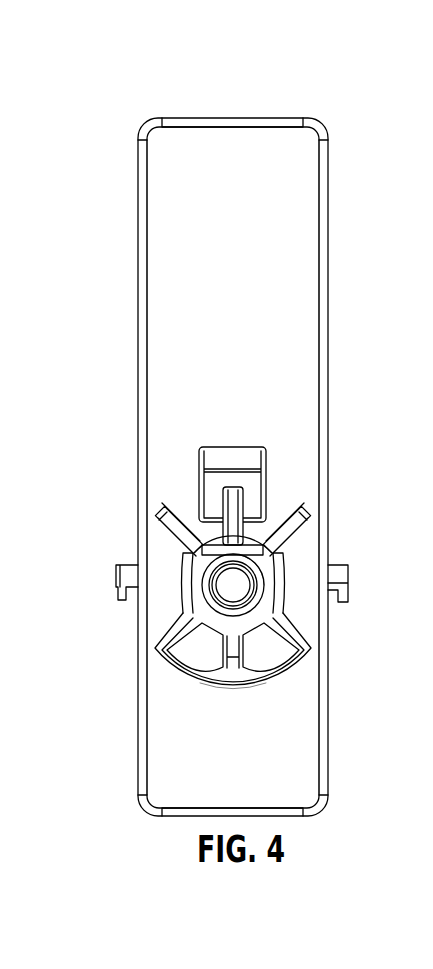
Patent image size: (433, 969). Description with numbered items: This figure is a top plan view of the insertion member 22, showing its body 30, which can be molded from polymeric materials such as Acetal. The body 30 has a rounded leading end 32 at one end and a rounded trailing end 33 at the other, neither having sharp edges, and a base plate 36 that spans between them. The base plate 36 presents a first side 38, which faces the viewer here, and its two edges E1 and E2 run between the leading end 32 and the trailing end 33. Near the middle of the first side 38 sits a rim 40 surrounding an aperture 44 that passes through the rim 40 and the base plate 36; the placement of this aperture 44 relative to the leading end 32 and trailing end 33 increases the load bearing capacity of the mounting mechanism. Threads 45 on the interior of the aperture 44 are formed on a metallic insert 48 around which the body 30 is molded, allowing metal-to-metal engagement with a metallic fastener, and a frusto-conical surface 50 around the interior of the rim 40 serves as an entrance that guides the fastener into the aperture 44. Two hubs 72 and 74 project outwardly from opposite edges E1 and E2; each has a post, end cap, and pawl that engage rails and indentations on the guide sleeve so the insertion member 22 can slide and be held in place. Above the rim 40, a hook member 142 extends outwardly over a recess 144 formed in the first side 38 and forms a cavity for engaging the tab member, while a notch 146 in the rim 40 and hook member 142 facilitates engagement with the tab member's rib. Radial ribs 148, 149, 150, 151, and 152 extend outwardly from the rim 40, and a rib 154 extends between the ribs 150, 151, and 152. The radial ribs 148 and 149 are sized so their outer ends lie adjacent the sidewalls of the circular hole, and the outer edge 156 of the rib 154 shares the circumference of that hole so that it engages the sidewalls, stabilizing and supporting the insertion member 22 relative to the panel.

The insertion member 22 is at (118, 199).
The body 30 is at (136, 278).
The leading end 32 is at (216, 117).
The trailing end 33 is at (170, 817).
The base plate 36 is at (212, 410).
The first side 38 is at (215, 189).
The rim 40 is at (238, 576).
The aperture 44 is at (188, 590).
The threads 45 is at (268, 577).
The metallic insert 48 is at (205, 568).
The frusto-conical surface 50 is at (262, 597).
The hub 72 is at (352, 581).
The hub 74 is at (111, 589).
The hook member 142 is at (226, 503).
The recess 144 is at (232, 447).
The notch 146 is at (236, 512).
The radial rib 148 is at (180, 530).
The radial rib 149 is at (297, 508).
The radial rib 150 is at (178, 619).
The radial rib 151 is at (226, 648).
The radial rib 152 is at (302, 637).
The rib 154 is at (262, 676).
The outer edge 156 is at (232, 686).
The edge E1 is at (329, 760).
The edge E2 is at (137, 748).